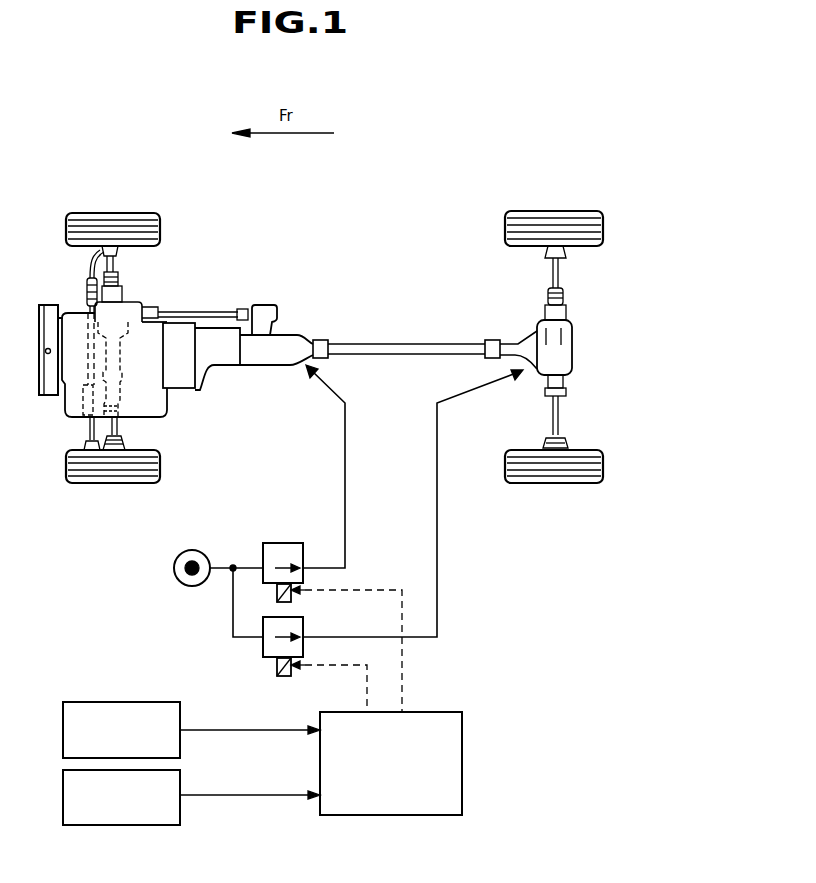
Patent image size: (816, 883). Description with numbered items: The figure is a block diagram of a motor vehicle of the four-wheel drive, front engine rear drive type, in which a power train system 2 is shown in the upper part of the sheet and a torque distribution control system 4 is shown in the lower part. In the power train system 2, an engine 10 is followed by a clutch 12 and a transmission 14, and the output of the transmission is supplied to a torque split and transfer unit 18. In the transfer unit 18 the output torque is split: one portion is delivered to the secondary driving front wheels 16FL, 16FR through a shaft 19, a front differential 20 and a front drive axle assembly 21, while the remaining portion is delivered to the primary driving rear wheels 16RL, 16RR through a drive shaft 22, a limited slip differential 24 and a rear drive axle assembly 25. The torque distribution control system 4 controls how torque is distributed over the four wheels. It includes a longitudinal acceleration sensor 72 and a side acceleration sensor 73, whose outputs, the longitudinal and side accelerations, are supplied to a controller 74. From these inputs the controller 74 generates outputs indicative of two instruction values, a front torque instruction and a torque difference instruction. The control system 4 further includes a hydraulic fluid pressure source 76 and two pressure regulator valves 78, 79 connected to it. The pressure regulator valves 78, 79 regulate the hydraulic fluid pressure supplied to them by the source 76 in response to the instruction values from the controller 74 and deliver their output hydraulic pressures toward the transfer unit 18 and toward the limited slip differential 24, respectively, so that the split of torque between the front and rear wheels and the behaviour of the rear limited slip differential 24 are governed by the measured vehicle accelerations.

The power train system 2 is at (407, 274).
The torque distribution control system 4 is at (255, 806).
The engine 10 is at (72, 345).
The clutch 12 is at (185, 378).
The transmission 14 is at (218, 360).
The front right wheel 16FR is at (108, 218).
The front left wheel 16FL is at (110, 484).
The rear right wheel 16RR is at (556, 218).
The rear left wheel 16RL is at (543, 487).
The torque split and transfer unit 18 is at (293, 338).
The shaft 19 is at (210, 312).
The front differential 20 is at (140, 305).
The front drive axle assembly 21 is at (114, 418).
The drive shaft 22 is at (357, 343).
The limited slip differential 24 is at (537, 340).
The rear drive axle assembly 25 is at (549, 411).
The longitudinal acceleration sensor 72 is at (181, 718).
The side acceleration sensor 73 is at (181, 790).
The controller 74 is at (430, 712).
The hydraulic fluid pressure source 76 is at (186, 550).
The pressure regulator valve 78 is at (284, 543).
The pressure regulator valve 79 is at (303, 632).